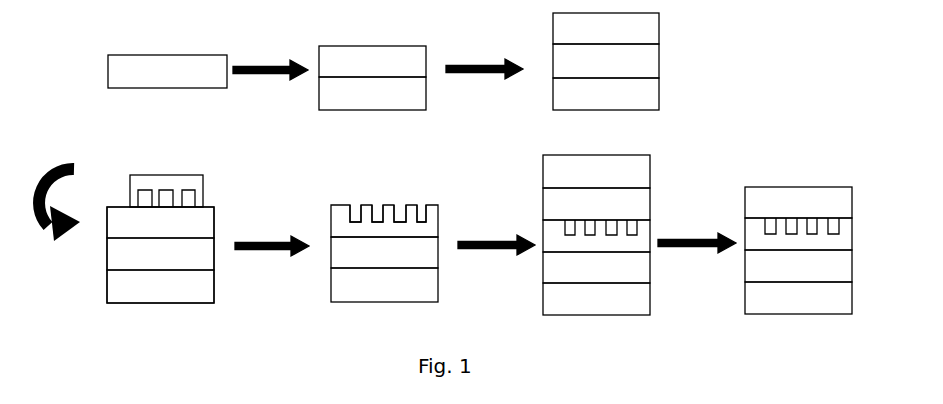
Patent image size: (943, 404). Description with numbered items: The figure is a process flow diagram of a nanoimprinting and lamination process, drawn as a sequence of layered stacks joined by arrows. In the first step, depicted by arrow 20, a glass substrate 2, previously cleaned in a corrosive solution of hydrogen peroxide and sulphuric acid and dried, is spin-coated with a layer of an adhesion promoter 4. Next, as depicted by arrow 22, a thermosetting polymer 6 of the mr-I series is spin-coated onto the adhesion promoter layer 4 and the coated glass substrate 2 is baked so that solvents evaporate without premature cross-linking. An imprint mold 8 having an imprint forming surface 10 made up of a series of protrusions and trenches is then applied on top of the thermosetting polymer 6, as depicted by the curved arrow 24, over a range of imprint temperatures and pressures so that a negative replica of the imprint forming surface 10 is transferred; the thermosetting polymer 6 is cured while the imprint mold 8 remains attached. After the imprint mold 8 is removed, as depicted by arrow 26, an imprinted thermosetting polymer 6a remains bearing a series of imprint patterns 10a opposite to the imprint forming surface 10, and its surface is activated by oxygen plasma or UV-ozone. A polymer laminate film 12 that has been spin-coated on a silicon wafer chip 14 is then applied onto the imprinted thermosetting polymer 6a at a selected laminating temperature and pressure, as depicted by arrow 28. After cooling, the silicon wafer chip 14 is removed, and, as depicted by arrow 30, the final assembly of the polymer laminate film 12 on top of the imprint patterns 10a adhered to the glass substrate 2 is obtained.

The glass substrate 2 is at (479, 185).
The adhesion promoter layer 4 is at (479, 163).
The thermosetting polymer 6 is at (383, 125).
The imprinted thermosetting polymer 6a is at (430, 228).
The imprint mold 8 is at (167, 182).
The imprint forming surface 10 is at (183, 242).
The imprint patterns 10a is at (412, 208).
The polymer laminate film 12 is at (697, 203).
The silicon wafer chip 14 is at (596, 171).
The arrow 20 is at (270, 79).
The arrow 22 is at (484, 79).
The arrow 24 is at (51, 218).
The arrow 26 is at (272, 257).
The arrow 28 is at (496, 255).
The arrow 30 is at (697, 253).